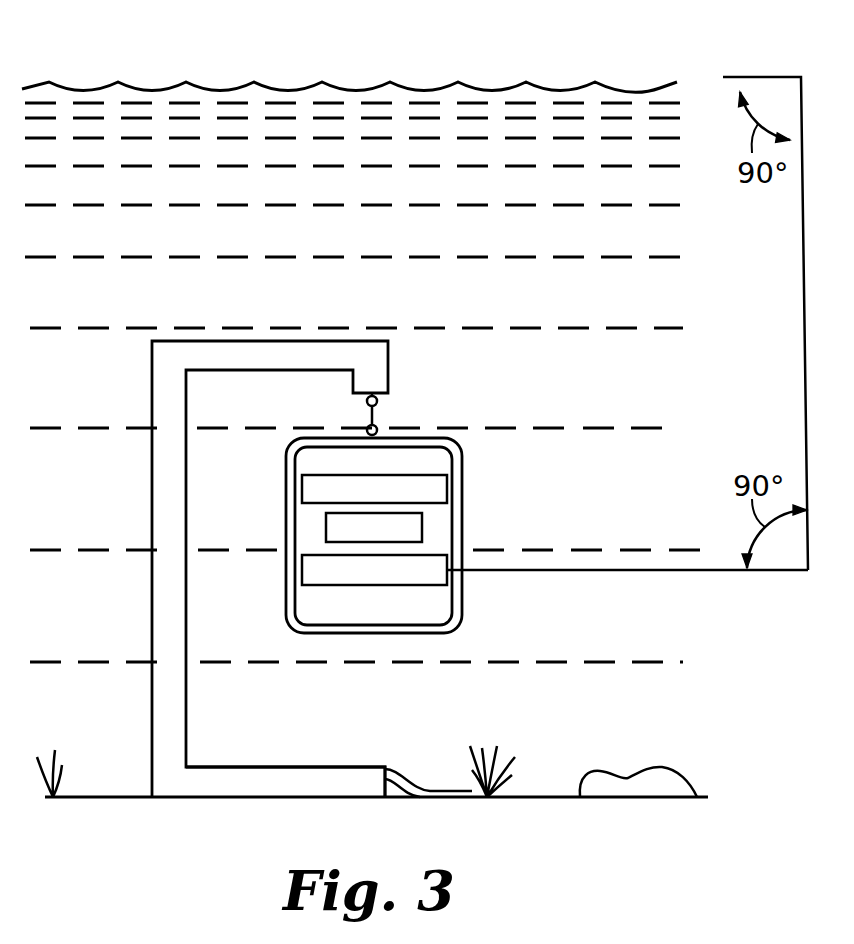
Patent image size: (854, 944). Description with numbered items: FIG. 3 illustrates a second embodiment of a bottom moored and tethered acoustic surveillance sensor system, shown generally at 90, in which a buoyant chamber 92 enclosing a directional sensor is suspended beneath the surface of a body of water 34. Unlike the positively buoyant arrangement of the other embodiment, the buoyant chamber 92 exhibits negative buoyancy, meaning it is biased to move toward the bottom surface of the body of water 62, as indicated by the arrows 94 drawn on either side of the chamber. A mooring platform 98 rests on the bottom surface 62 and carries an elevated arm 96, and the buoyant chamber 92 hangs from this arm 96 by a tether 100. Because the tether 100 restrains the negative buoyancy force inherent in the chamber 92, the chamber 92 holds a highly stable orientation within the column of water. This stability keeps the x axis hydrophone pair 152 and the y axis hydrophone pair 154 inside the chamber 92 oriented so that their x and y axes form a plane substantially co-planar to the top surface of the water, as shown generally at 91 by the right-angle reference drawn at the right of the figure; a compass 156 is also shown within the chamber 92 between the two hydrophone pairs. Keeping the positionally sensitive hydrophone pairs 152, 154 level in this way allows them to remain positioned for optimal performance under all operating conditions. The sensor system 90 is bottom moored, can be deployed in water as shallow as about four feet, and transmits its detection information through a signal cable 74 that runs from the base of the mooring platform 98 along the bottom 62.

The water surface 34 is at (421, 89).
The bottom surface of the body of water 62 is at (549, 797).
The signal cable 74 is at (410, 780).
The sensor system 90 is at (418, 333).
The plane co-planar to the top surface of the body of water 91 is at (803, 318).
The buoyant chamber 92 is at (463, 462).
The arrow 94 is at (253, 530).
The elevated arm 96 is at (292, 340).
The mooring platform 98 is at (326, 765).
The tether 100 is at (376, 414).
The x axis hydrophone pair 152 is at (453, 487).
The y axis hydrophone pair 154 is at (302, 573).
The compass 156 is at (422, 530).